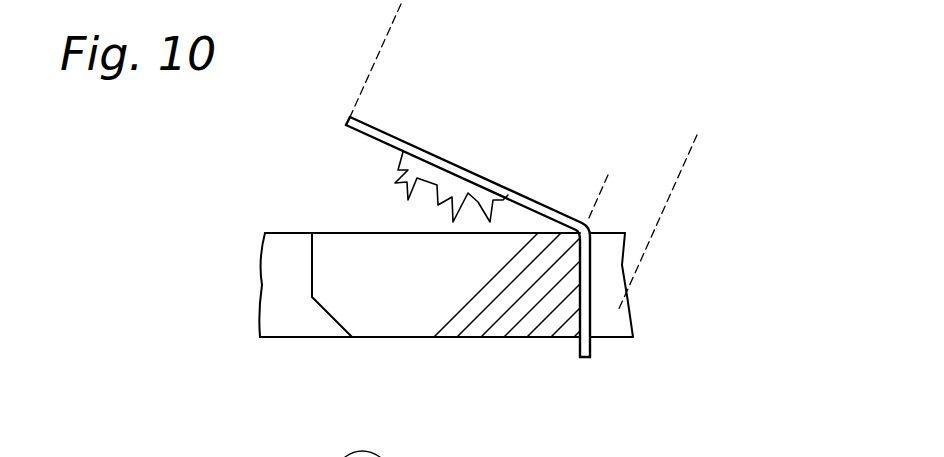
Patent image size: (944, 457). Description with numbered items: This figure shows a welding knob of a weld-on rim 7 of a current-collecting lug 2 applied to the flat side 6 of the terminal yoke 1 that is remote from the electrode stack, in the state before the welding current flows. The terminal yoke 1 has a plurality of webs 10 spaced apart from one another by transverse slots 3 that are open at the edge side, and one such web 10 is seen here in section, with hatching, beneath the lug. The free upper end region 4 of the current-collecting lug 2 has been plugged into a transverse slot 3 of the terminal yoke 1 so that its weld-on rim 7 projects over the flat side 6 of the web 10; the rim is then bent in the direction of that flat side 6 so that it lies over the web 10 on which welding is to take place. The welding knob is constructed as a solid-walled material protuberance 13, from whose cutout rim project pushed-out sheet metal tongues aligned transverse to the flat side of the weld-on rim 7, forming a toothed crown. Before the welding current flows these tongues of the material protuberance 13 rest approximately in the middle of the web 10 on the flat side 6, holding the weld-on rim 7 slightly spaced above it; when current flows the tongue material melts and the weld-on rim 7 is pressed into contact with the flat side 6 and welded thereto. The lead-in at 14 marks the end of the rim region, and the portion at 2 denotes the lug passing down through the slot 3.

The terminal yoke 1 is at (230, 322).
The current-collecting lug 2 is at (580, 367).
The transverse slot 3 is at (287, 320).
The upper end region 4 is at (697, 135).
The flat side 6 is at (347, 217).
The weld-on rim 7 is at (608, 175).
The web 10 is at (468, 315).
The material protuberance 13 is at (403, 168).
The lead end portion 14 is at (372, 153).